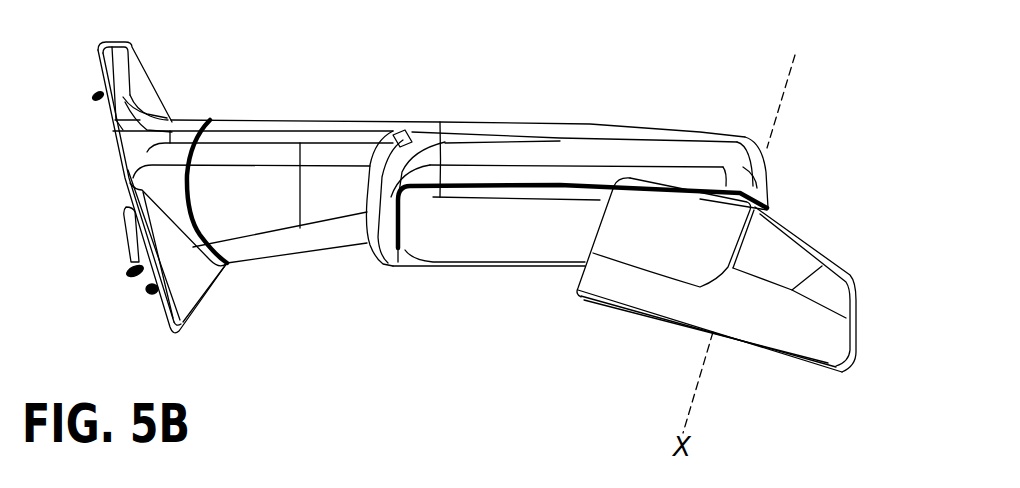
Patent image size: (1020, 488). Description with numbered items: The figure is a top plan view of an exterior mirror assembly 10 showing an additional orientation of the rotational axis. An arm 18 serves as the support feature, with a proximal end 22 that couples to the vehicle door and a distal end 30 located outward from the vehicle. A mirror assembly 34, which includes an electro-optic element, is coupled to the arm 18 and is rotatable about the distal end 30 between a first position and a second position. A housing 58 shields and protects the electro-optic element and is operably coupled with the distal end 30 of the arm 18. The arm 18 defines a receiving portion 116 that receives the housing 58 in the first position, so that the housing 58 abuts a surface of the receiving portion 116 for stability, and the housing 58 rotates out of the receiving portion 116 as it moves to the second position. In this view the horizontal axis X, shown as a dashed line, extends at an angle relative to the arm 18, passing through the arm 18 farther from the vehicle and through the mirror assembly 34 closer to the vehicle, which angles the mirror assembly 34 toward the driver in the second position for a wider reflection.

The exterior mirror assembly 10 is at (860, 223).
The arm 18 is at (253, 142).
The proximal end 22 is at (207, 160).
The distal end 30 is at (750, 140).
The mirror assembly 34 is at (622, 343).
The housing 58 is at (673, 213).
The receiving portion 116 is at (438, 227).